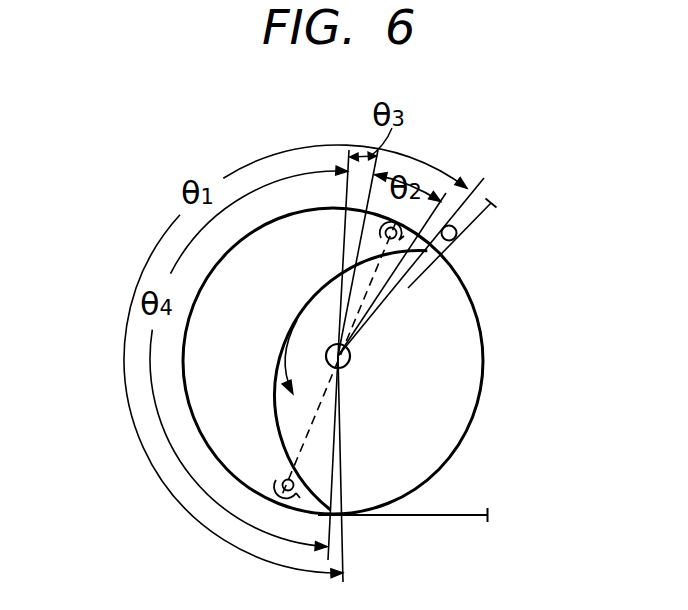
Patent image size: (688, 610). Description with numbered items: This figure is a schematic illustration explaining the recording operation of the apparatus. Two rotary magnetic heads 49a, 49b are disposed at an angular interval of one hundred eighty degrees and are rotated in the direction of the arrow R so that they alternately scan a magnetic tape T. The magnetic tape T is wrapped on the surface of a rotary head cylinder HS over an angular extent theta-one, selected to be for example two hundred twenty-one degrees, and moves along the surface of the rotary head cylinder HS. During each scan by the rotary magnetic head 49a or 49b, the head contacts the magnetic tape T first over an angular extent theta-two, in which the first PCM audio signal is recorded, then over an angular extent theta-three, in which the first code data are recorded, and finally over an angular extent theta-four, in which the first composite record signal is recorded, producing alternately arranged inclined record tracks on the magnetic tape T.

The rotary magnetic head 49a is at (380, 237).
The rotary magnetic head 49b is at (277, 477).
The rotary head cylinder HS is at (481, 365).
The magnetic tape T is at (461, 513).
The arrow R (direction of rotation) R is at (276, 357).